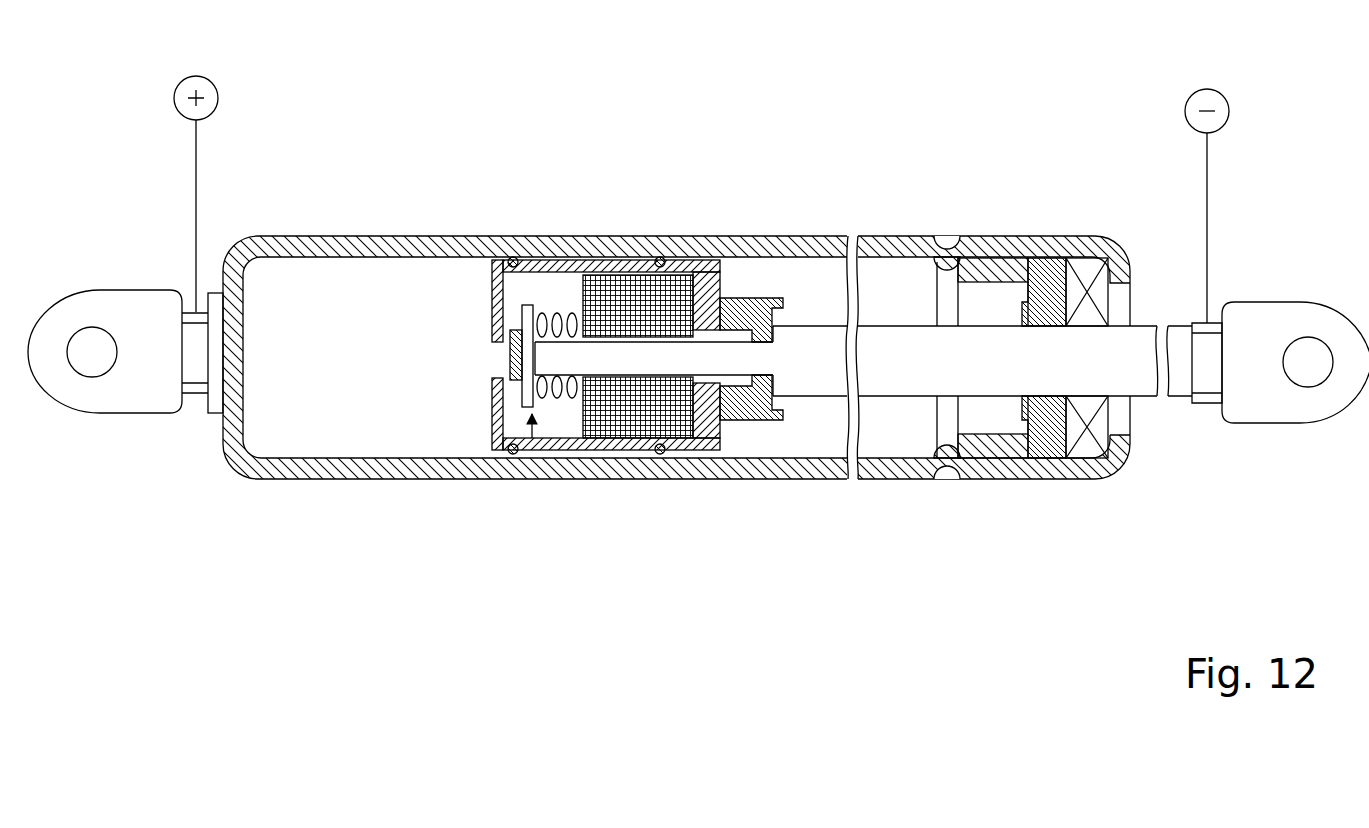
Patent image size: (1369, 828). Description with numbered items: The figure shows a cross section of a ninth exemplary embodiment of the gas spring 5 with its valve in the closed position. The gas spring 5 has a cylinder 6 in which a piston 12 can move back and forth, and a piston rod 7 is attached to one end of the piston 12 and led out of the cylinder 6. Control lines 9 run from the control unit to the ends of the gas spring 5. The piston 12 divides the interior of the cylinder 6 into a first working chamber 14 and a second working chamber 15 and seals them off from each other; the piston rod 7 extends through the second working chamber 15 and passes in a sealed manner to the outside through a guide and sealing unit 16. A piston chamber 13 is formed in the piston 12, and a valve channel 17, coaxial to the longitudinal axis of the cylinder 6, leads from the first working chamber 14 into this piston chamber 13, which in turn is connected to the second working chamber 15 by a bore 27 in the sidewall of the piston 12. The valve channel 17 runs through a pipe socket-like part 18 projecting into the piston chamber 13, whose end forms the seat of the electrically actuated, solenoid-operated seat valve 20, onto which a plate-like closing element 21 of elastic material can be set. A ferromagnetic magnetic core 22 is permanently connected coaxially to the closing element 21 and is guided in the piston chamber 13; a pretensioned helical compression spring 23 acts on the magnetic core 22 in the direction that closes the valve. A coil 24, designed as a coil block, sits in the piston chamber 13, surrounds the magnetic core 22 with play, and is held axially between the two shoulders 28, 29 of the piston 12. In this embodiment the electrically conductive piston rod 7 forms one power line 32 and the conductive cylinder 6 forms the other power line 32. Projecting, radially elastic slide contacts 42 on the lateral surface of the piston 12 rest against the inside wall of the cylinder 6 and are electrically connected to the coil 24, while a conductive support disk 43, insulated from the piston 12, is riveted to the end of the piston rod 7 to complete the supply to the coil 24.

The gas spring 5 is at (868, 164).
The cylinder 6 is at (383, 245).
The piston rod 7 is at (1143, 342).
The control lines 9 is at (196, 203).
The piston 12 is at (584, 358).
The piston chamber 13 is at (528, 257).
The first working chamber 14 is at (363, 427).
The second working chamber 15 is at (928, 432).
The guide and sealing unit 16 is at (1048, 254).
The valve channel 17 is at (493, 357).
The pipe socket-like part 18 is at (493, 340).
The seat valve 20 is at (532, 440).
The closing element 21 is at (480, 267).
The magnetic core 22 is at (618, 352).
The spring 23 is at (553, 262).
The coil 24 is at (613, 447).
The bore 27 is at (562, 457).
The shoulder 28 is at (570, 262).
The shoulder 29 is at (710, 443).
The power line 32 is at (270, 458).
The slide contacts 42 is at (658, 258).
The support disk 43 is at (765, 298).